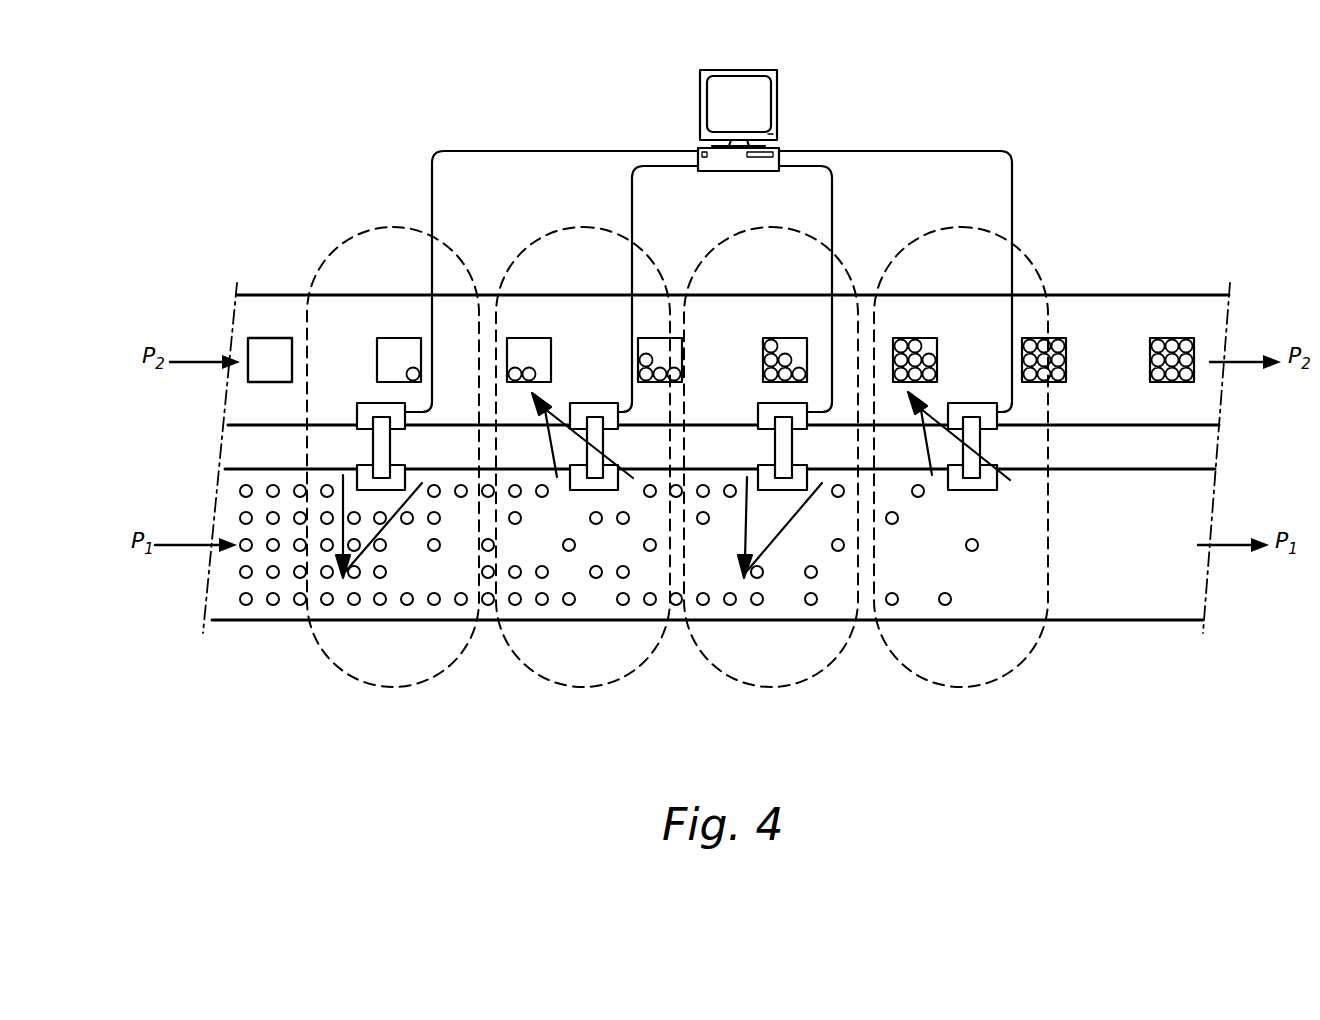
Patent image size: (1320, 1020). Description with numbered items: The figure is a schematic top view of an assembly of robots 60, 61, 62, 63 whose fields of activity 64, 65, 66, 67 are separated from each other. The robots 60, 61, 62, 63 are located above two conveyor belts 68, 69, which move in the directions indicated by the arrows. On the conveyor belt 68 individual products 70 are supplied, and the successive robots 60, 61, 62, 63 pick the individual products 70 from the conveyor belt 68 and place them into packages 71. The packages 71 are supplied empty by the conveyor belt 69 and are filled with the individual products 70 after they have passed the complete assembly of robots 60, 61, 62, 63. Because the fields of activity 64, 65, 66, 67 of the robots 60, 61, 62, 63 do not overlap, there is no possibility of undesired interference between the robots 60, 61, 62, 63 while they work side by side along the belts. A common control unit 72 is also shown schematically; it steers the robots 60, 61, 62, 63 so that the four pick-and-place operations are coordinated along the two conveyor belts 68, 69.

The robot 60 is at (382, 452).
The robot 61 is at (596, 452).
The robot 62 is at (784, 452).
The robot 63 is at (972, 452).
The field of activity 64 is at (392, 690).
The field of activity 65 is at (582, 690).
The field of activity 66 is at (771, 690).
The field of activity 67 is at (960, 690).
The conveyor belt 68 is at (216, 586).
The conveyor belt 69 is at (237, 400).
The individual products 70 is at (248, 603).
The package 71 is at (268, 338).
The common control unit 72 is at (757, 112).